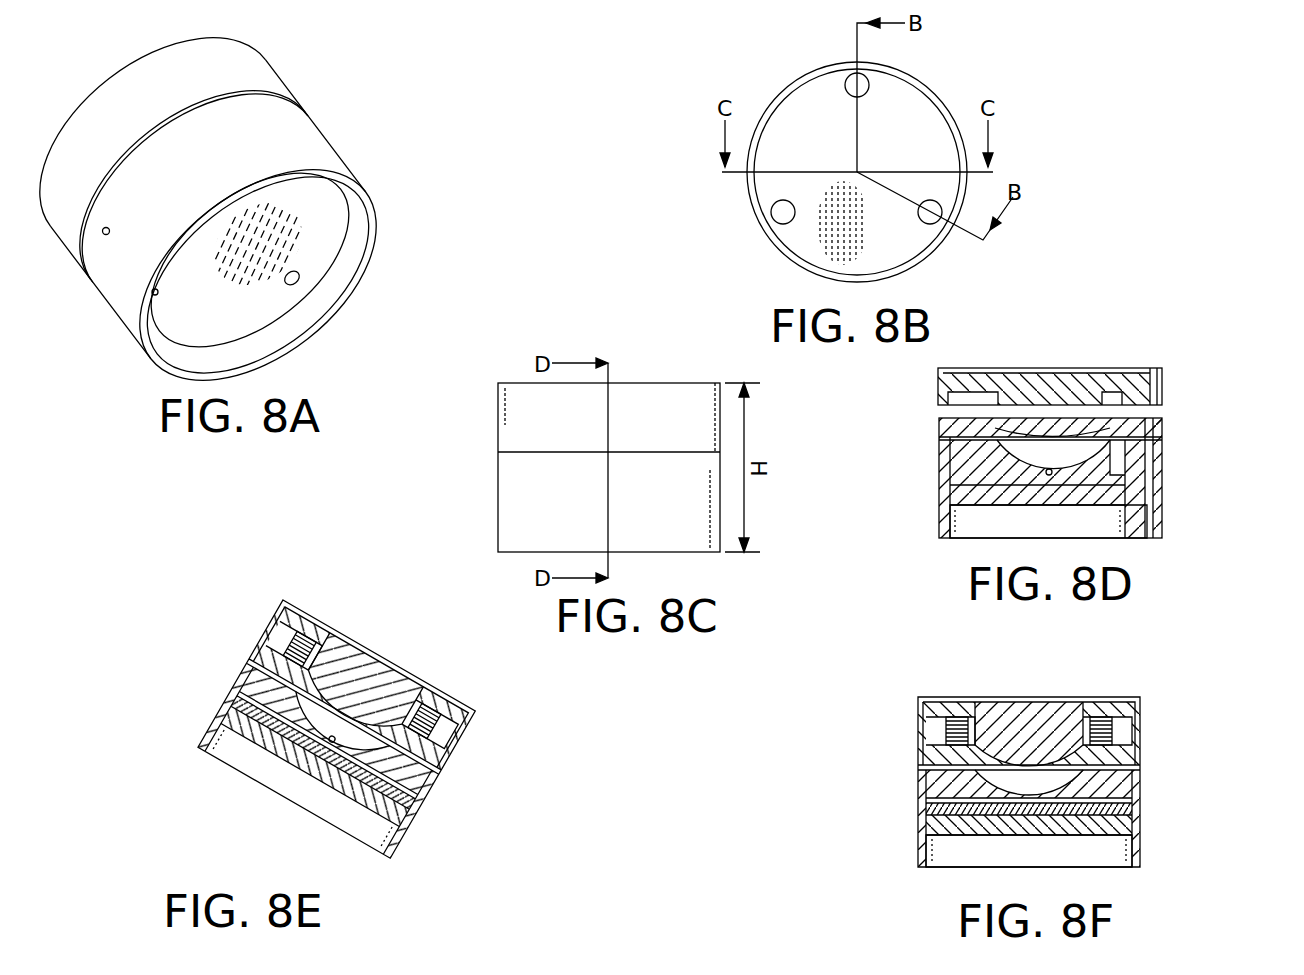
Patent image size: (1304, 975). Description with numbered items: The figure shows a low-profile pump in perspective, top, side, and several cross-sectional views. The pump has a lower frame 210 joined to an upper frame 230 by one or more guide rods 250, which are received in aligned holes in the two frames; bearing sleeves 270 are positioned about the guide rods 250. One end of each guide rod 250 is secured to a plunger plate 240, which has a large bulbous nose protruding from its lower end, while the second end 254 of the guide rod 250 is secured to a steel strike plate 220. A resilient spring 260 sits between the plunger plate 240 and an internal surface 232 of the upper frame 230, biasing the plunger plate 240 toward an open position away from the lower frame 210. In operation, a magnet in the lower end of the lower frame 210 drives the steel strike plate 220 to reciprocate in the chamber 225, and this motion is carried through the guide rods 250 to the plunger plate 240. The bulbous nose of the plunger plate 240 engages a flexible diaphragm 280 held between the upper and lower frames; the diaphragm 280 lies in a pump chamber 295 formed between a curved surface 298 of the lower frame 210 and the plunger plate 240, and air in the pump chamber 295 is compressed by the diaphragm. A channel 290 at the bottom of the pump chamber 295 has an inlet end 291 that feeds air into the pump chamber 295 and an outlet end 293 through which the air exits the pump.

In FIG. 8A, the lower frame 210 is at (318, 147).
In FIG. 8D, the lower frame 210 is at (1197, 458).
In FIG. 8A, the steel strike plate 220 is at (317, 222).
In FIG. 8F, the steel strike plate 220 is at (987, 813).
In FIG. 8E, the steel strike plate 220 is at (353, 788).
In FIG. 8D, the chamber 225 is at (1143, 508).
In FIG. 8F, the chamber 225 is at (1063, 850).
In FIG. 8A, the upper frame 230 is at (253, 72).
In FIG. 8D, the upper frame 230 is at (1163, 397).
In FIG. 8F, the internal surface 232 is at (1117, 752).
In FIG. 8D, the plunger plate 240 is at (1080, 380).
In FIG. 8F, the plunger plate 240 is at (1050, 712).
In FIG. 8E, the plunger plate 240 is at (365, 660).
In FIG. 8F, the guide rod 250 is at (947, 737).
In FIG. 8E, the guide rod 250 is at (245, 712).
In FIG. 8E, the second end 254 is at (393, 852).
In FIG. 8E, the resilient spring 260 is at (285, 648).
In FIG. 8E, the bearing sleeve 270 is at (243, 675).
In FIG. 8E, the flexible diaphragm 280 is at (307, 747).
In FIG. 8A, the channel 290 is at (105, 233).
In FIG. 8F, the channel 290 is at (1130, 808).
In FIG. 8E, the channel 290 is at (340, 737).
In FIG. 8F, the inlet end 291 is at (1122, 802).
In FIG. 8F, the outlet end 293 is at (920, 802).
In FIG. 8E, the pump chamber 295 is at (358, 707).
In FIG. 8D, the curved surface 298 is at (1033, 453).
In FIG. 8E, the curved surface 298 is at (350, 745).